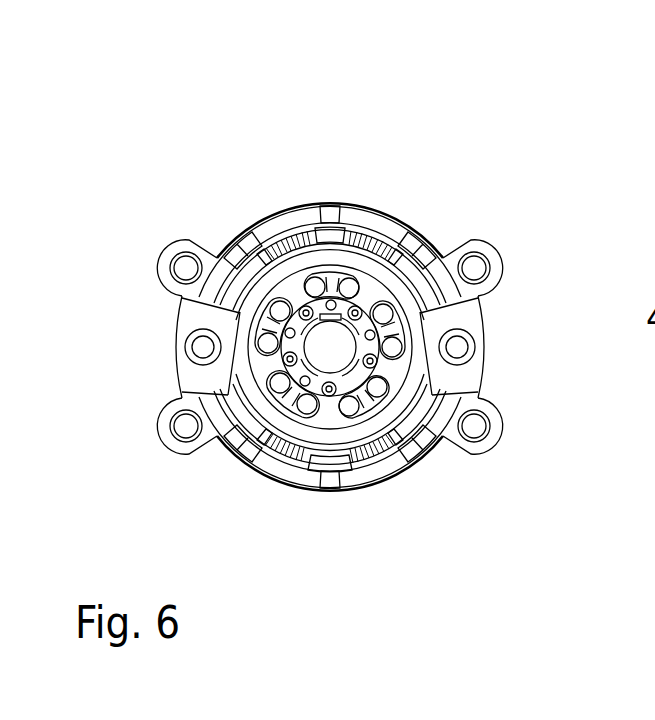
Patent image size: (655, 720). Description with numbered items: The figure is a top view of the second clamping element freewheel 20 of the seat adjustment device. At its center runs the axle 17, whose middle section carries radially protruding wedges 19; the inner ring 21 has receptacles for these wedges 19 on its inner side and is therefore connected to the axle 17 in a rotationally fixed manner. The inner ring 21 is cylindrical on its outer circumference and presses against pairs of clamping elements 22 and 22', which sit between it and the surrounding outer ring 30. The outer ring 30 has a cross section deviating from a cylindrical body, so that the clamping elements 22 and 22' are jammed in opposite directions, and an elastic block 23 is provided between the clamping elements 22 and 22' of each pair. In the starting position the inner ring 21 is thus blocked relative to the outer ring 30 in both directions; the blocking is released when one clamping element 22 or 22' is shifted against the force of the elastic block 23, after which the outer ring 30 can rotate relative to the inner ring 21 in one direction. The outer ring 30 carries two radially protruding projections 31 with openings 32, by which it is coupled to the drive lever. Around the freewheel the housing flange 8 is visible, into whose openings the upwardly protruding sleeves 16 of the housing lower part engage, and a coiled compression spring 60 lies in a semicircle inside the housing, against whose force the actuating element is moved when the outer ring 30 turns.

The second clamping element freewheel 20 is at (482, 163).
The flange 8 is at (190, 250).
The sleeve 16 is at (186, 268).
The axle 17 is at (343, 355).
The wedge 19 is at (326, 398).
The inner ring 21 is at (306, 280).
The clamping element 22 is at (352, 369).
The clamping element 22' is at (343, 319).
The elastic block 23 is at (385, 320).
The outer ring 30 is at (377, 275).
The projection 31 is at (468, 312).
The opening 32 is at (458, 350).
The spring 60 is at (427, 452).